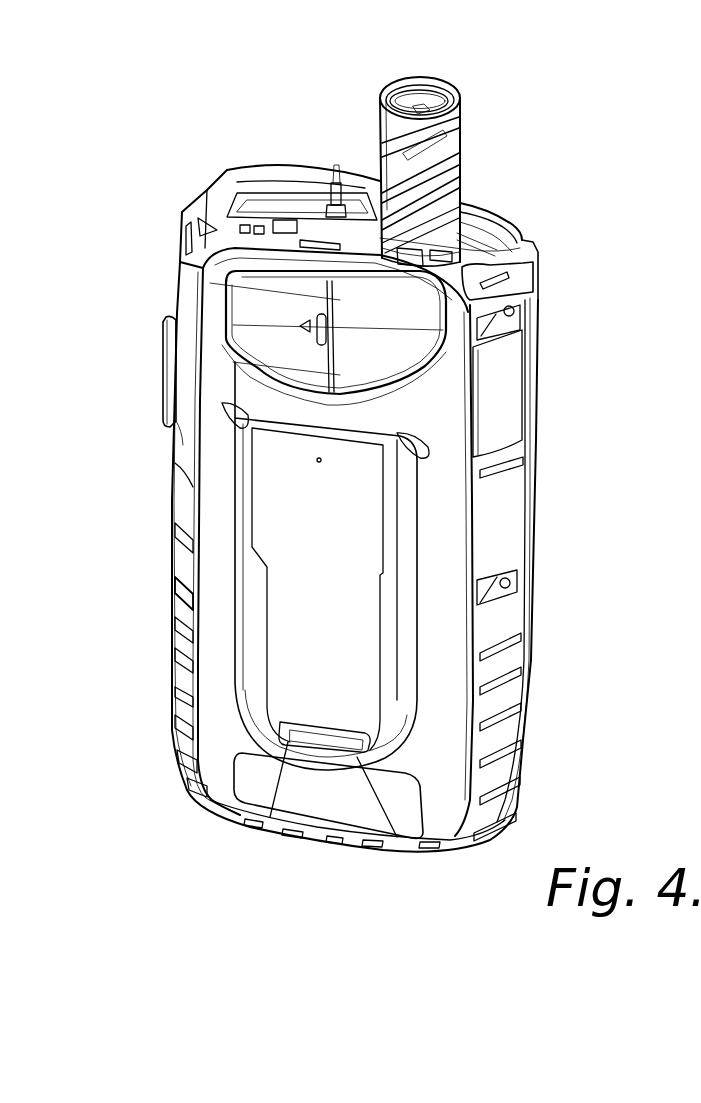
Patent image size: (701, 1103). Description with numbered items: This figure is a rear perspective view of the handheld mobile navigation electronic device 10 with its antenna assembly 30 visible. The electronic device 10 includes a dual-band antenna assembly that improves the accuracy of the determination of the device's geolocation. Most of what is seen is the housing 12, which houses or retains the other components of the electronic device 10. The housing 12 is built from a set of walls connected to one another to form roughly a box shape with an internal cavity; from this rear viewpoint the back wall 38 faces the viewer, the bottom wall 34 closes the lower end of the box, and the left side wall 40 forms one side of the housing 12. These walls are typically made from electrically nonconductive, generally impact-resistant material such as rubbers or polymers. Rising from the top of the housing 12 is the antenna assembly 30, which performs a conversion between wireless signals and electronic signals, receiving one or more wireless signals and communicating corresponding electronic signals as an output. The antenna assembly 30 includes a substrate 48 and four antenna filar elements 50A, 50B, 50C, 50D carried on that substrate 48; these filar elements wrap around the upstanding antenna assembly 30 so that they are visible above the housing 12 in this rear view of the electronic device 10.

The handheld mobile navigation electronic device 10 is at (270, 52).
The housing 12 is at (150, 258).
The antenna assembly 30 is at (510, 107).
The bottom wall 34 is at (273, 830).
The back wall 38 is at (217, 562).
The left side wall 40 is at (516, 399).
The substrate 48 is at (411, 77).
The antenna filar element 50A is at (367, 158).
The antenna filar element 50B is at (336, 191).
The antenna filar element 50C is at (290, 235).
The antenna filar element 50D is at (450, 252).